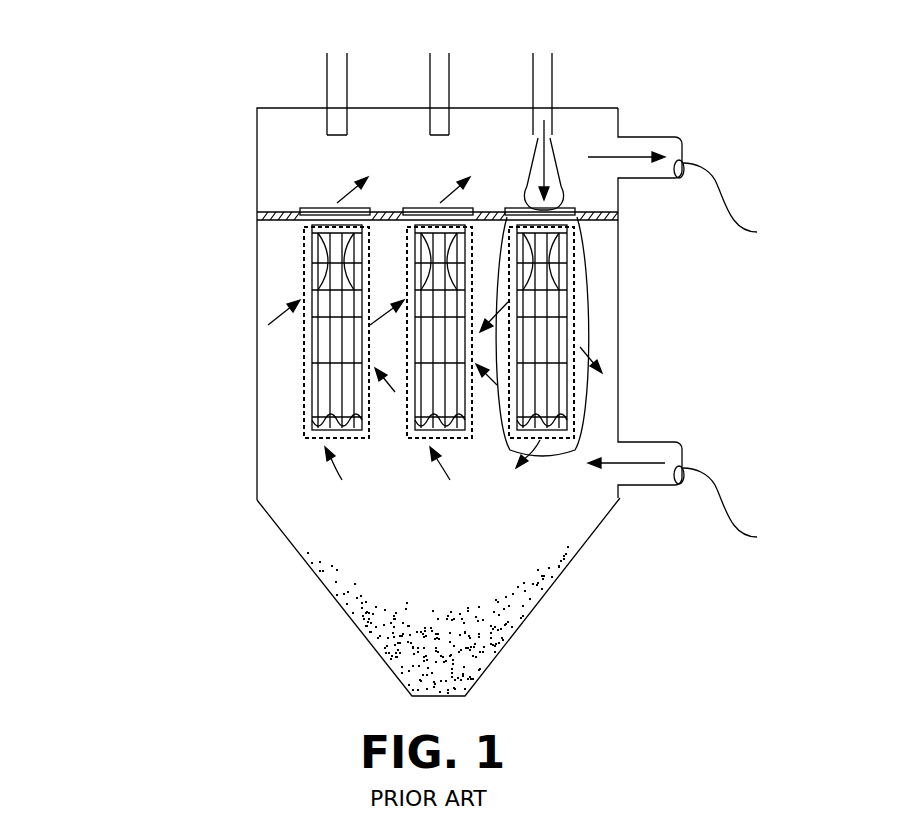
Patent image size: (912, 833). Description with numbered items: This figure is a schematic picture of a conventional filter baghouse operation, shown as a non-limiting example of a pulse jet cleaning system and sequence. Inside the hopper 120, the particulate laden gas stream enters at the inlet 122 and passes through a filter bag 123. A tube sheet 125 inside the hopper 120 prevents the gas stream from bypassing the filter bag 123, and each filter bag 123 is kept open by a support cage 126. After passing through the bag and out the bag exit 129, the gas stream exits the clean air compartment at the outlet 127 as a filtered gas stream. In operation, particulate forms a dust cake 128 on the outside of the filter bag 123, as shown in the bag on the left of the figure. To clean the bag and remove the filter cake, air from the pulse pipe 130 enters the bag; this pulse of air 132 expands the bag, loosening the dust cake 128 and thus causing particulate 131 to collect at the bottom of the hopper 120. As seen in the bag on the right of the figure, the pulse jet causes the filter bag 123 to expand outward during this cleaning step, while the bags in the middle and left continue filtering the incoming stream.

The hopper 120 is at (325, 510).
The inlet 122 is at (650, 446).
The filter bag 123 is at (303, 274).
The tube sheet 125 is at (262, 222).
The support cage 126 is at (310, 373).
The outlet 127 is at (636, 143).
The dust cake 128 is at (308, 445).
The bag exit 129 is at (312, 178).
The pulse pipe 130 is at (464, 78).
The particulate 131 is at (518, 623).
The pulse of air 132 is at (548, 170).